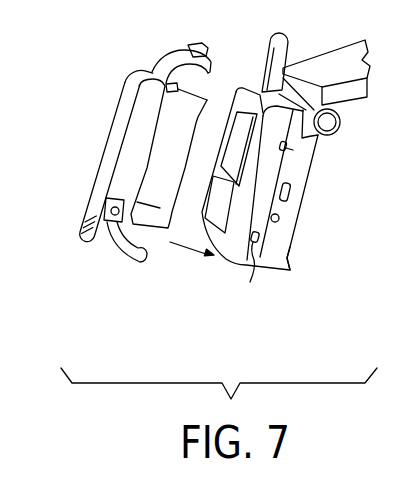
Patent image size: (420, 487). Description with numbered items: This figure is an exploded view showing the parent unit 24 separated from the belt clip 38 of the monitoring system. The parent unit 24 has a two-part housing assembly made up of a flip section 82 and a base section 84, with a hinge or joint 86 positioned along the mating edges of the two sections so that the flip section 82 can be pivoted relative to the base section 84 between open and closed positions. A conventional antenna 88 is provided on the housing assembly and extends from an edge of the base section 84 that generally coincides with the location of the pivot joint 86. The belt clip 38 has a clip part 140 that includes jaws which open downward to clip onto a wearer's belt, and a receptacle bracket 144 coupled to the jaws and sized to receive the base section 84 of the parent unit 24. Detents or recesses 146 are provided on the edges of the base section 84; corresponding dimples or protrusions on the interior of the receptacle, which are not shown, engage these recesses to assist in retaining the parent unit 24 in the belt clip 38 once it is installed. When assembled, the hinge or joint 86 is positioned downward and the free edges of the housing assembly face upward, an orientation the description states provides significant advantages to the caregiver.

The parent unit 24 is at (320, 213).
The belt clip 38 is at (101, 261).
The flip section 82 is at (338, 60).
The base section 84 is at (297, 243).
The hinge or joint 86 is at (333, 126).
The antenna 88 is at (215, 78).
The clip part 140 is at (112, 138).
The receptacle bracket 144 is at (201, 78).
The detents or recesses 146 is at (293, 150).